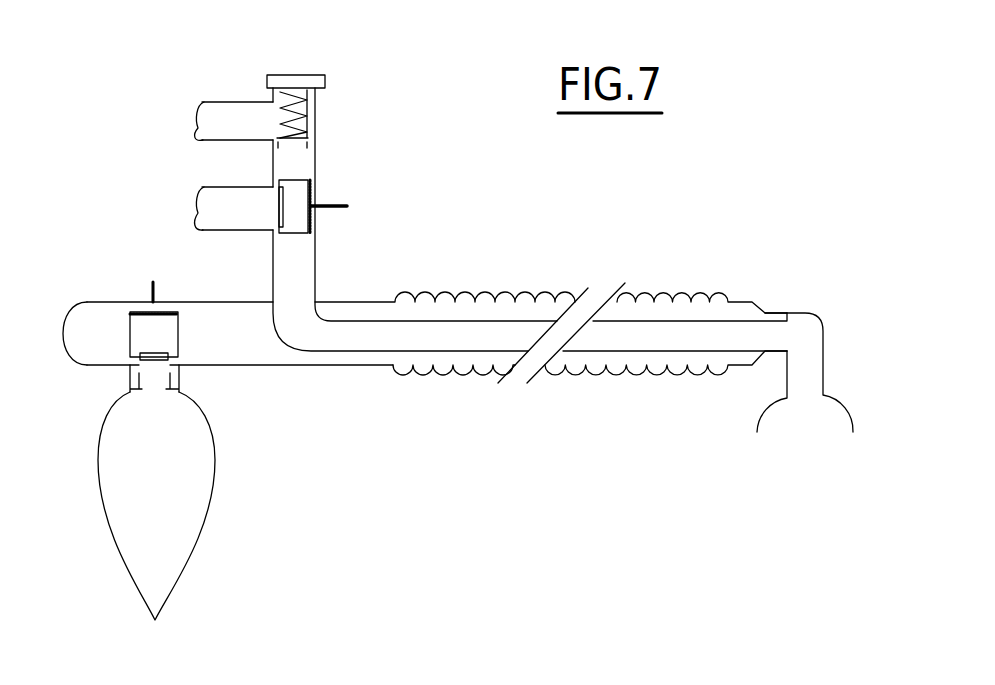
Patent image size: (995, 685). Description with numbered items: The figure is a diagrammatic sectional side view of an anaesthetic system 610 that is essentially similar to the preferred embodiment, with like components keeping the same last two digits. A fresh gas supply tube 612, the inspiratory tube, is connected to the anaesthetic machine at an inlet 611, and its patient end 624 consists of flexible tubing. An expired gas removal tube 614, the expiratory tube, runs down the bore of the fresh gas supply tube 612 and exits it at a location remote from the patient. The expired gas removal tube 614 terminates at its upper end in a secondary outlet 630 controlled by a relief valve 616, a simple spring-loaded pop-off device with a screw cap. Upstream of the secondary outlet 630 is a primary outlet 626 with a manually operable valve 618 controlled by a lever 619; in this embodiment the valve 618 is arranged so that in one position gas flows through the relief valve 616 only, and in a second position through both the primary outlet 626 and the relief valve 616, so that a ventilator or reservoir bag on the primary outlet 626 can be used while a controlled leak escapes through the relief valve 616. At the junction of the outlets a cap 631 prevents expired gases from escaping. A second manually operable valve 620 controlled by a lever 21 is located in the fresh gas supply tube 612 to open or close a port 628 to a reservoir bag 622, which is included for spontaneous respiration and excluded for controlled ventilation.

The anaesthetic system 610 is at (472, 479).
The inlet 611 is at (62, 333).
The fresh gas supply tube 612 is at (452, 368).
The expired gas removal tube 614 is at (477, 332).
The relief valve 616 is at (318, 108).
The manually operable valve 618 is at (317, 183).
The lever 619 is at (348, 206).
The second manually operable valve 620 is at (138, 322).
The lever 21 is at (157, 276).
The reservoir bag 622 is at (190, 483).
The patient end of fresh gas supply tube 624 is at (796, 416).
The primary outlet 626 is at (208, 197).
The port 628 is at (150, 382).
The secondary outlet 630 is at (195, 123).
The cap 631 is at (328, 246).